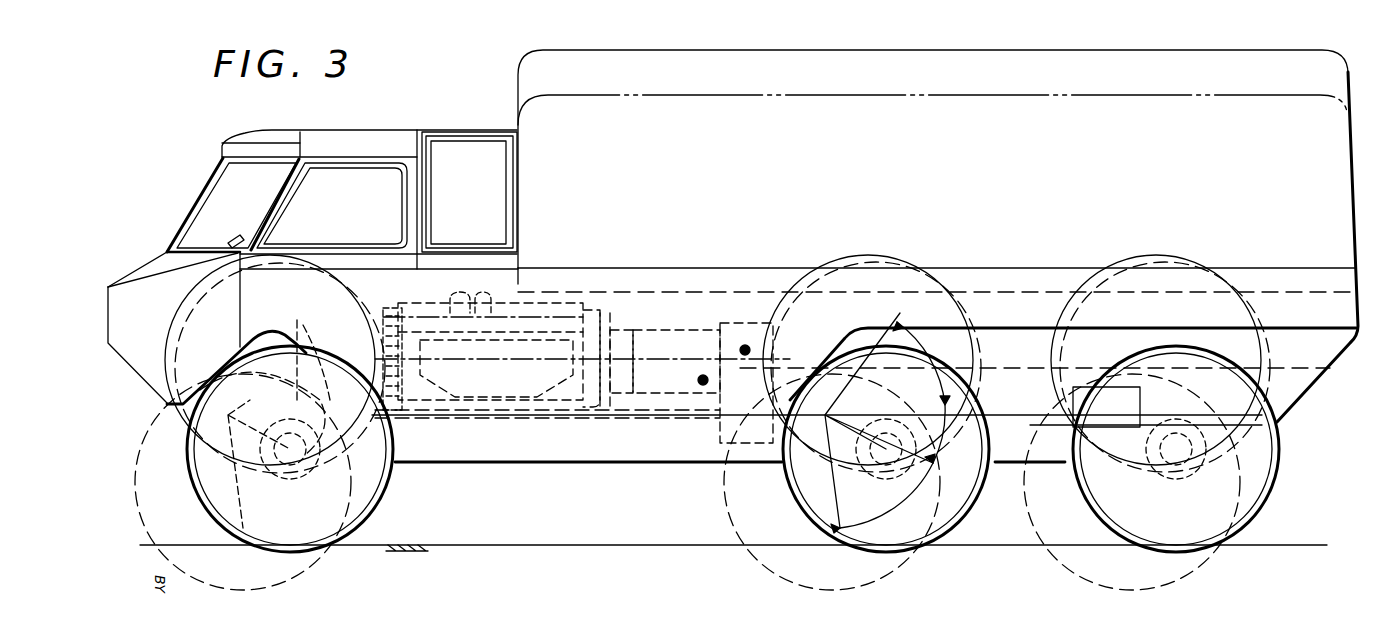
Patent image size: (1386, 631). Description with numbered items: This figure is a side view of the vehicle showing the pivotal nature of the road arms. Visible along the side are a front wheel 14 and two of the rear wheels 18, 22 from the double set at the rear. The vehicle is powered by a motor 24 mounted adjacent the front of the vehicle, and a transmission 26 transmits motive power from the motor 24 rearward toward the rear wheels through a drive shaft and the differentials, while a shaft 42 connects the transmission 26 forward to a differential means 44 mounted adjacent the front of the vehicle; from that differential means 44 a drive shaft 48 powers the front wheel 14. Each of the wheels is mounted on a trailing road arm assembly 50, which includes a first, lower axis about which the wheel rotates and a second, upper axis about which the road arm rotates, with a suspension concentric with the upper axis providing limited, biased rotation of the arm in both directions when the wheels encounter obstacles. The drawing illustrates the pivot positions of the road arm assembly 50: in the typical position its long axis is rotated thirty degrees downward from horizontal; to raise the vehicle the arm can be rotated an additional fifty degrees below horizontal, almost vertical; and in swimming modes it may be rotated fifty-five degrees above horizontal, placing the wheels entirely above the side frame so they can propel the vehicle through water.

The front wheel 14 is at (337, 547).
The rear wheel 18 is at (936, 547).
The rear wheel 22 is at (1230, 545).
The motor 24 is at (478, 402).
The transmission 26 is at (626, 418).
The shaft 42 is at (518, 420).
The differential means 44 is at (348, 375).
The drive shaft 48 is at (297, 330).
The trailing road arm assembly 50 is at (268, 498).